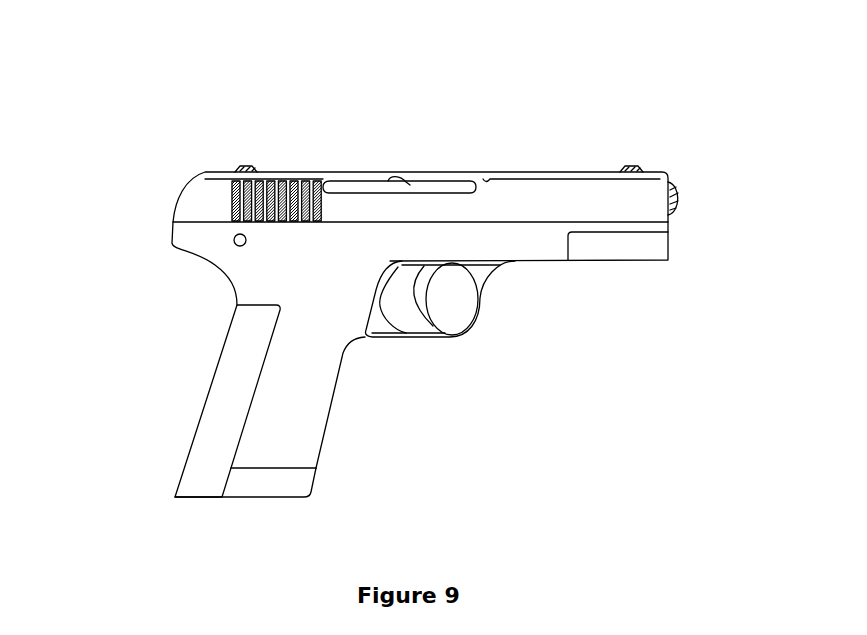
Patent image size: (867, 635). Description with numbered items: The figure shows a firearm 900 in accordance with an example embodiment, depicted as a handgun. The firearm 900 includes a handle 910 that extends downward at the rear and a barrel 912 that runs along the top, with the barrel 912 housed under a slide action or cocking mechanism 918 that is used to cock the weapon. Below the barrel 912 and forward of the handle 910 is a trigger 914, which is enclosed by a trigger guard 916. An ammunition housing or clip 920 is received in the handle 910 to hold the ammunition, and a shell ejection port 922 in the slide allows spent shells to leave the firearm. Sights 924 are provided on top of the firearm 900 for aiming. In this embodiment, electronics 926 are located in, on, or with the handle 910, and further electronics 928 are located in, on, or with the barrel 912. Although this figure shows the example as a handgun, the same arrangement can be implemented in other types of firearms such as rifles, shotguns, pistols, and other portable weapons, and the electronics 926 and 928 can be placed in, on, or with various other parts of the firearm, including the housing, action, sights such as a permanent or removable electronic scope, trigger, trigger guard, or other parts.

The firearm 900 is at (131, 127).
The handle 910 is at (325, 388).
The barrel 912 is at (523, 191).
The trigger 914 is at (436, 330).
The trigger guard 916 is at (480, 298).
The slide action or cocking mechanism 918 is at (305, 192).
The ammunition housing or clip 920 is at (307, 480).
The shell ejection port 922 is at (396, 180).
The sights 924 is at (255, 168).
The electronics 926 is at (220, 397).
The electronics 928 is at (633, 259).